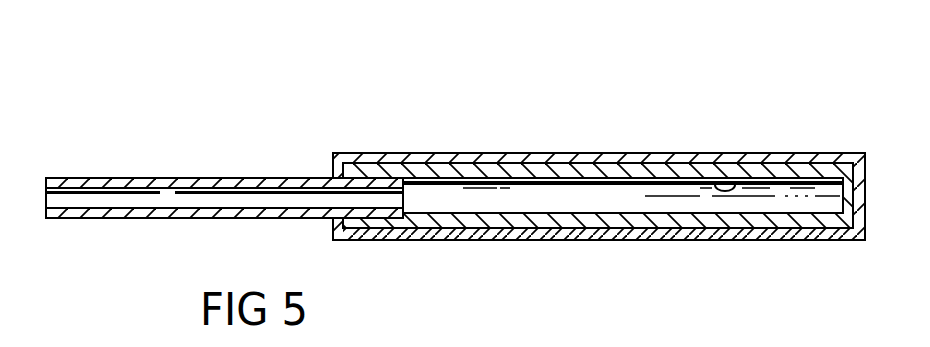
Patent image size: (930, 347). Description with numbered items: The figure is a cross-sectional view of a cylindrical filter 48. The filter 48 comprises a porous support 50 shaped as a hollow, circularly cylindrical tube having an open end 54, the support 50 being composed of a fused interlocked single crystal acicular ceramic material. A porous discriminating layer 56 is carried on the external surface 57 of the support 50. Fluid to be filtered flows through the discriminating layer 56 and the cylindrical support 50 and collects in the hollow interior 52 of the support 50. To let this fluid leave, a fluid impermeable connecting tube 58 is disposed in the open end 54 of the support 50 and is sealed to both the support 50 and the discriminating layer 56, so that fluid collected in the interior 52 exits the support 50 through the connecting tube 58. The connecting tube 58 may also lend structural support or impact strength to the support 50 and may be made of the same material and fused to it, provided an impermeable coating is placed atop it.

The cylindrical filter 48 is at (548, 137).
The porous support 50 is at (725, 183).
The hollow interior 52 is at (582, 208).
The open end 54 is at (548, 146).
The porous discriminating layer 56 is at (608, 153).
The external surface 57 is at (532, 158).
The connecting tube 58 is at (136, 177).